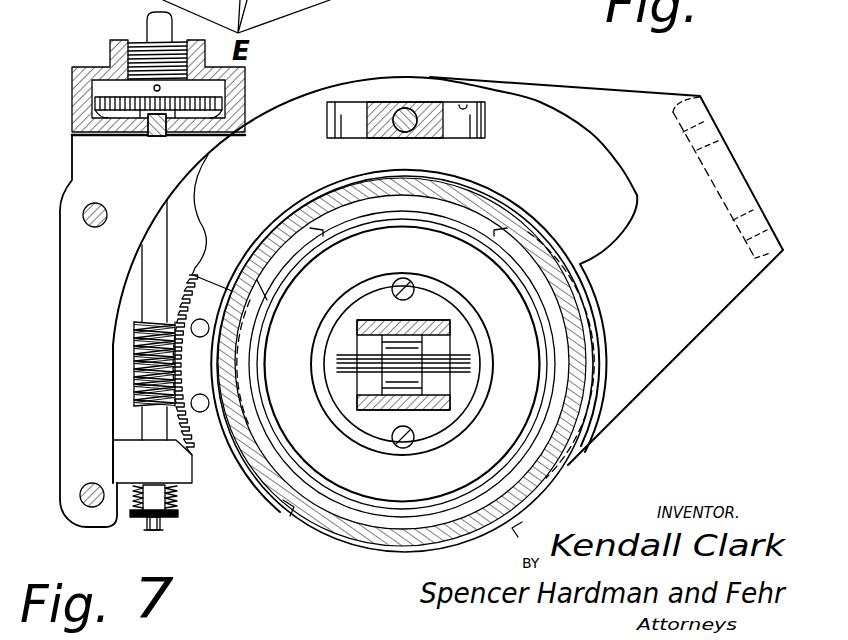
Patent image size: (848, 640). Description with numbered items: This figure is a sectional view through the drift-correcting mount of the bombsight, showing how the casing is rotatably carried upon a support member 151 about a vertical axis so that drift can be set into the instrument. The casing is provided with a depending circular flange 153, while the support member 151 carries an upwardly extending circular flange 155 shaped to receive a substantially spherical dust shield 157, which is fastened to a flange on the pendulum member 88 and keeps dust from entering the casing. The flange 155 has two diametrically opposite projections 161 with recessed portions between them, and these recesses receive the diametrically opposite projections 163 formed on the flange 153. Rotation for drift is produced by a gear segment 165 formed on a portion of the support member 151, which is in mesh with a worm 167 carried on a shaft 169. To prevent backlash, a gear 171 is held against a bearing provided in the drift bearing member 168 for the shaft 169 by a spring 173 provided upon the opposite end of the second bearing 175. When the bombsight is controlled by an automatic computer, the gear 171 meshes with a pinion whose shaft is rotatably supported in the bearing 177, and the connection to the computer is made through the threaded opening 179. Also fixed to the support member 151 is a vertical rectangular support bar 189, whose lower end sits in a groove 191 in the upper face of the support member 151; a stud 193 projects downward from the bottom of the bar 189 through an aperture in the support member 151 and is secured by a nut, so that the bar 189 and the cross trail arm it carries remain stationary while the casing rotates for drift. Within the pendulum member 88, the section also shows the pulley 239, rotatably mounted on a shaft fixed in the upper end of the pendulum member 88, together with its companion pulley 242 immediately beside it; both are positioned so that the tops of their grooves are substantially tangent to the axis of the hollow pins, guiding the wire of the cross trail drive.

The threaded opening 179 is at (140, 47).
The gear 171 is at (105, 108).
The bearing 177 is at (155, 138).
The drift bearing member 168 is at (68, 305).
The shaft 169 is at (163, 282).
The worm 167 is at (135, 400).
The projections 163 is at (245, 453).
The gear segment 165 is at (194, 458).
The second bearing 175 is at (193, 480).
The spring 173 is at (135, 500).
The projections 161 is at (280, 507).
The circular flange 155 is at (332, 533).
The circular flange 153 is at (372, 545).
The dust shield 157 is at (402, 382).
The pendulum member 88 is at (403, 410).
The pulley 239 is at (370, 372).
The companion pulley 242 is at (433, 355).
The vertical rectangular support bar 189 is at (378, 103).
The support member 151 is at (402, 84).
The stud 193 is at (418, 103).
The groove 191 is at (463, 105).